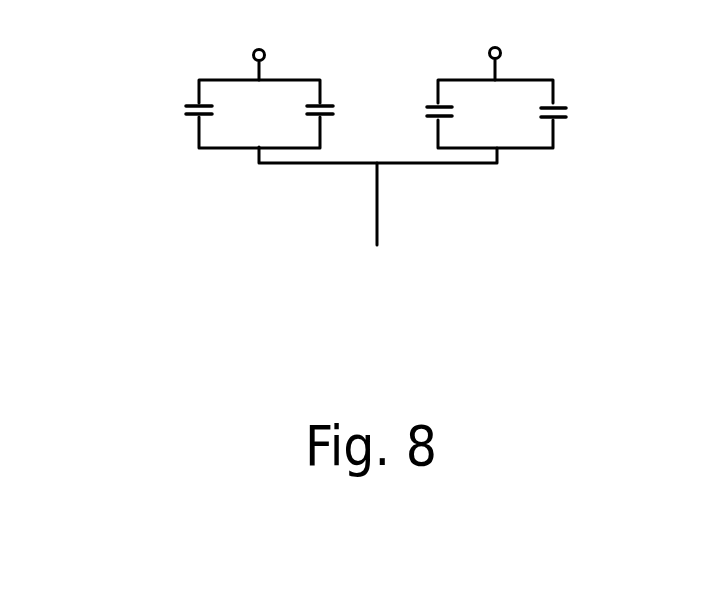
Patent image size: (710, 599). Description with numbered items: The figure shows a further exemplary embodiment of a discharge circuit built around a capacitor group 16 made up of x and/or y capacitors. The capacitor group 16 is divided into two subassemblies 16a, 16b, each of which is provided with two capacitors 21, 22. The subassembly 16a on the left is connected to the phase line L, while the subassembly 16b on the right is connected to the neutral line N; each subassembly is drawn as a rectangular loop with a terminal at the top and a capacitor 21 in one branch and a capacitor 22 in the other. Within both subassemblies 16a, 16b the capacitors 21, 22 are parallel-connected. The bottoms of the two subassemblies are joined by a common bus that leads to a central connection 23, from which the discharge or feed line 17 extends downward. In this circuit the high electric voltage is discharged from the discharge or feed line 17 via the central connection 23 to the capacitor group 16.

The capacitor group 16 is at (589, 151).
The subassembly 16a is at (178, 142).
The subassembly 16b is at (585, 102).
The discharge or feed line 17 is at (375, 207).
The capacitor 21 is at (187, 104).
The capacitor 22 is at (328, 103).
The central connection 23 is at (387, 163).